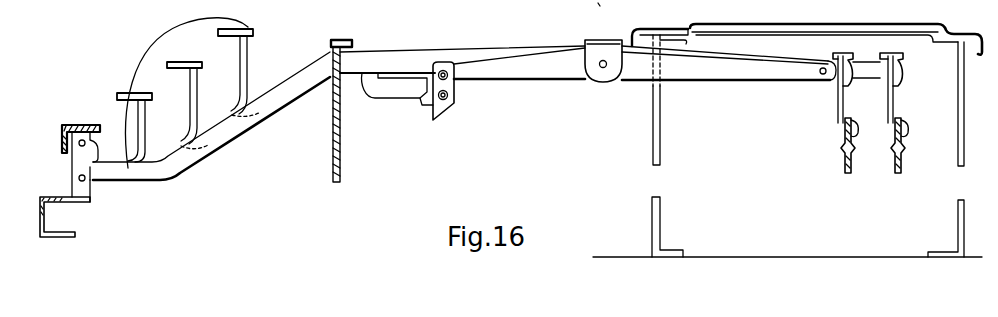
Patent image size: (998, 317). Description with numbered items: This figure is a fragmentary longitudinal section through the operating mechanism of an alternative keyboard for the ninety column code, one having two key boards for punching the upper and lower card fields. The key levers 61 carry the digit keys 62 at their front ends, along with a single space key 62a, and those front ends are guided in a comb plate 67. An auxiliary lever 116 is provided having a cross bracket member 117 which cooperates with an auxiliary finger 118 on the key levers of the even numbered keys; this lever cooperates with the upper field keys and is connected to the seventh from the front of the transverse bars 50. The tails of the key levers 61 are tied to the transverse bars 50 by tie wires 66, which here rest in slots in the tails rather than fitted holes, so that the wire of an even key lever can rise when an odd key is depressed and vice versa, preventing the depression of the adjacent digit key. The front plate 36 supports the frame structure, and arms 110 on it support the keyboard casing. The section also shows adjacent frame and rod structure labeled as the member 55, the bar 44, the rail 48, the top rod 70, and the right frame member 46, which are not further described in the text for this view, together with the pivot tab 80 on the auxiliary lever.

The space key 62a is at (100, 112).
The digit keys 62 is at (185, 62).
The comb plate 67 is at (342, 165).
The key levers 61 is at (427, 55).
The auxiliary finger 118 is at (390, 90).
The cross bracket member 117 is at (432, 110).
The auxiliary lever 116 is at (562, 68).
The pivot tab 80 is at (615, 2).
The member 55 is at (598, 3).
The frame bar 44 is at (660, 43).
The arms 110 is at (686, 41).
The front plate 36 is at (661, 115).
The rail 48 is at (783, 0).
The top rod 70 is at (836, 27).
The right frame member 46 is at (946, 128).
The tie wires 66 is at (890, 93).
The transverse bars 50 is at (890, 163).